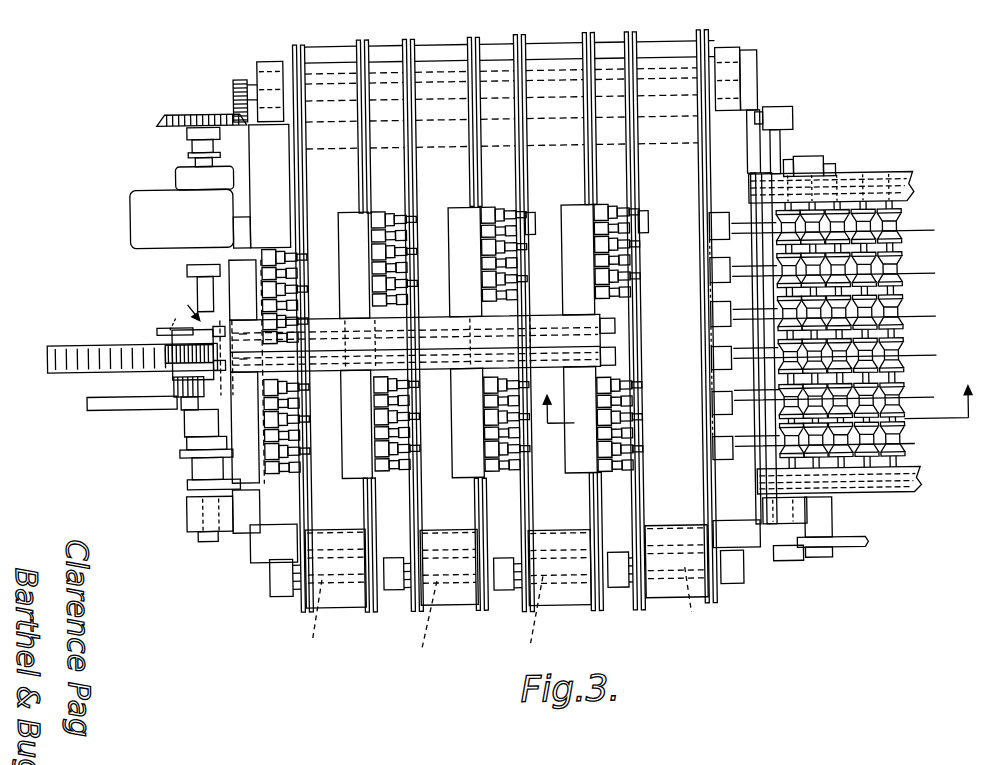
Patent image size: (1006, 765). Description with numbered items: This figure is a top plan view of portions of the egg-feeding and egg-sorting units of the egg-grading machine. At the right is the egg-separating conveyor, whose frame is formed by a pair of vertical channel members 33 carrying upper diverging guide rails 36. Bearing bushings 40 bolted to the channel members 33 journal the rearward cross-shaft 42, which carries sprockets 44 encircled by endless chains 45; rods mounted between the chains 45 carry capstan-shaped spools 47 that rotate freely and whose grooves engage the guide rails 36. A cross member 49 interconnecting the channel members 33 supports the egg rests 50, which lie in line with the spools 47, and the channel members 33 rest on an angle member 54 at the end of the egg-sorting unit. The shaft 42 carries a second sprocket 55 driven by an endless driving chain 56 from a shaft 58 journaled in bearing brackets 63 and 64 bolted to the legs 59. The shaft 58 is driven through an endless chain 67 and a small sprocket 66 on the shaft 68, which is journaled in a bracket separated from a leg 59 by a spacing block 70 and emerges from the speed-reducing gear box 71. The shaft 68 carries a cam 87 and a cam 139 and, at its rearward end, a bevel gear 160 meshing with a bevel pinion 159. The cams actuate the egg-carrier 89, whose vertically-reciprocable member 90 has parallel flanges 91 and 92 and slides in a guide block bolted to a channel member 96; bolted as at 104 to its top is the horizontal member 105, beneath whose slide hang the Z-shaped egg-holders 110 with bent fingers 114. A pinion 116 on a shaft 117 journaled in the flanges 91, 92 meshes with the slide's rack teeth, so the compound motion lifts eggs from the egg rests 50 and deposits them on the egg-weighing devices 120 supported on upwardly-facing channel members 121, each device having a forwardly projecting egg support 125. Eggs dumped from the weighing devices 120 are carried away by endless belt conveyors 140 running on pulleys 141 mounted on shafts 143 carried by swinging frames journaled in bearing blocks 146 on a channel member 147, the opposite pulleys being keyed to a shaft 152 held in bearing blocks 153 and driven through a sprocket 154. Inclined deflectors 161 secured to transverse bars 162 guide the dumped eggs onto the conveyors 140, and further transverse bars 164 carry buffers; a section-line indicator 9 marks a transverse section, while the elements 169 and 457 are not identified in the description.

The section line 9- 9 is at (758, 394).
The vertical channel members 33 is at (882, 178).
The upper diverging guide rails 36 is at (926, 238).
The bearing bushings 40 is at (816, 162).
The cross-shaft 42 is at (838, 192).
The sprockets 44 is at (800, 164).
The endless chains 45 is at (908, 178).
The capstan-shaped rollers or spools 47 is at (904, 223).
The cross member 49 is at (758, 297).
The egg rests 50 is at (745, 233).
The angle member 54 is at (701, 163).
The second sprocket 55 is at (829, 558).
The endless driving chain 56 is at (846, 550).
The shaft 58 is at (763, 586).
The legs 59 is at (258, 146).
The bearing bracket 63 is at (797, 120).
The bearing bracket 64 is at (786, 566).
The small sprocket 66 is at (190, 462).
The endless chain 67 is at (178, 451).
The shaft 68 is at (194, 144).
The spacing block 70 is at (228, 534).
The speed-reducing gear box 71 is at (140, 221).
The cam 87 is at (122, 404).
The egg-carrier 89 is at (424, 372).
The vertically-reciprocable member 90 is at (185, 308).
The flange 91 is at (157, 326).
The flange 92 is at (173, 384).
The channel member 96 is at (270, 186).
The bolts 104 is at (252, 330).
The horizontal member 105 is at (436, 330).
The egg-holders 110 is at (411, 344).
The bent fingers 114 is at (378, 210).
The pinion 116 is at (160, 360).
The shaft 117 is at (161, 317).
The egg-weighing devices 120 is at (272, 282).
The channel members 121 is at (721, 216).
The egg support 125 is at (531, 212).
The cam 139 is at (185, 481).
The endless belt conveyor 140 is at (339, 605).
The pulleys 141 is at (328, 544).
The shafts 143 is at (507, 614).
The bearing blocks 146 is at (278, 590).
The channel member 147 is at (270, 566).
The shaft 152 is at (383, 60).
The bearing blocks 153 is at (272, 58).
The sprocket 154 is at (754, 54).
The bevel pinion 159 is at (237, 82).
The bevel gear 160 is at (170, 109).
The inclined guides or deflectors 161 is at (310, 505).
The transverse bars 162 is at (294, 612).
The transverse bars 164 is at (373, 615).
The bearing block 169 is at (184, 522).
The tie rod 457 is at (488, 95).